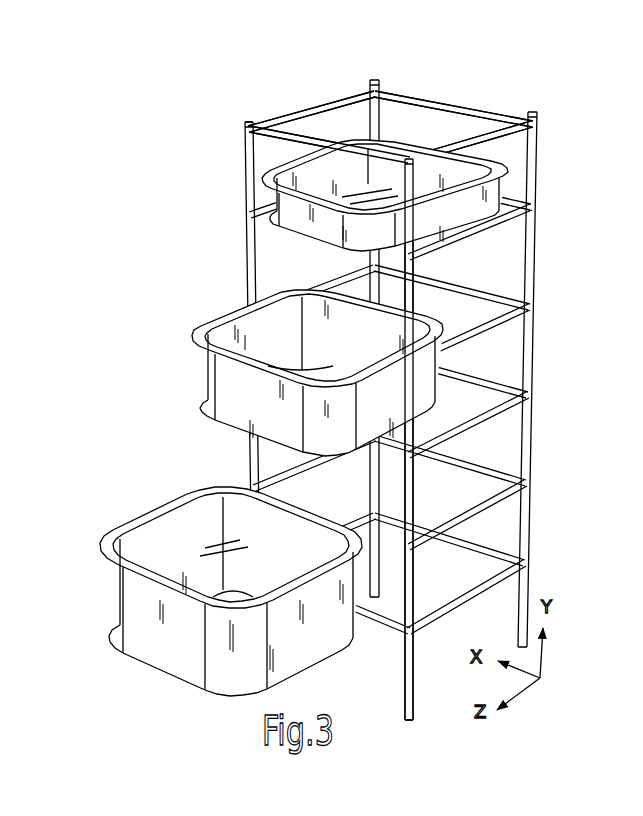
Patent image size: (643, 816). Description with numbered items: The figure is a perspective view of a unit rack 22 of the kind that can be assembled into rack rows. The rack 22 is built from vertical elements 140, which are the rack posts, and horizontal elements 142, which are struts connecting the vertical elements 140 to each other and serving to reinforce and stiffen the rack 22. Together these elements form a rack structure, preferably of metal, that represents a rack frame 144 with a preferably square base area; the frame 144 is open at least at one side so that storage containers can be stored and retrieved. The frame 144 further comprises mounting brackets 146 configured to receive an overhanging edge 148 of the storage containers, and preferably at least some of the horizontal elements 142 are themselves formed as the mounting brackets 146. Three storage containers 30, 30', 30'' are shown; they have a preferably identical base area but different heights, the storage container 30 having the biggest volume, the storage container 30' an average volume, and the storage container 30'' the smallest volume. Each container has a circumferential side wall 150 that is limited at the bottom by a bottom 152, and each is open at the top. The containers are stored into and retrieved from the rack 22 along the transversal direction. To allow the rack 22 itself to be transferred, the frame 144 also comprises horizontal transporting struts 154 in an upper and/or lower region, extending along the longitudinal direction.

The rack 22 is at (240, 97).
The storage container 30 is at (228, 567).
The storage container 30' is at (273, 373).
The storage container 30'' is at (335, 195).
The vertical element 140 is at (381, 122).
The horizontal element 142 is at (476, 338).
The rack frame 144 is at (444, 125).
The mounting bracket 146 is at (333, 286).
The overhanging edge 148 is at (224, 308).
The side wall 150 is at (109, 625).
The bottom 152 is at (243, 590).
The transporting strut 154 is at (320, 134).